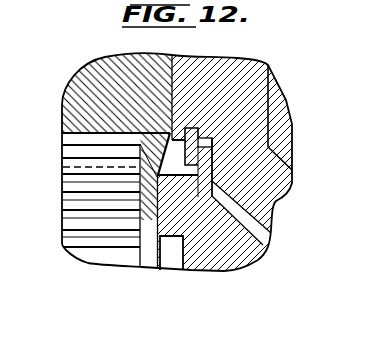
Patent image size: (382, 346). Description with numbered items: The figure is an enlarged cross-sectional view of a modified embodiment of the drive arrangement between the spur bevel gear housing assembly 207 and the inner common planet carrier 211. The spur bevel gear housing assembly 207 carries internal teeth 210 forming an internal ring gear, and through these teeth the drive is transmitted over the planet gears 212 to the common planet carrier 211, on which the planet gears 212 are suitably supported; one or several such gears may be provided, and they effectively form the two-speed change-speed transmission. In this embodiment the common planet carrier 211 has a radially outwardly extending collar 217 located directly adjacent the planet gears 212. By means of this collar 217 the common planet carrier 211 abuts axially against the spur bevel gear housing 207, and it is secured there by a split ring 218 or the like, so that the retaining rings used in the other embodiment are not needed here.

The spur bevel gear housing assembly 207 is at (275, 201).
The internal teeth 210 is at (68, 135).
The common planet carrier 211 is at (257, 260).
The planet gears 212 is at (68, 203).
The collar 217 is at (213, 162).
The split ring 218 is at (189, 131).